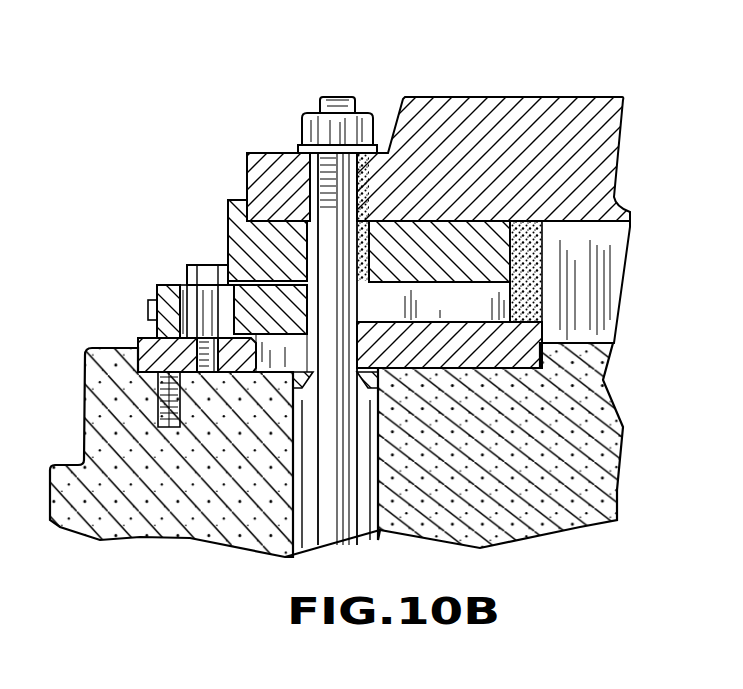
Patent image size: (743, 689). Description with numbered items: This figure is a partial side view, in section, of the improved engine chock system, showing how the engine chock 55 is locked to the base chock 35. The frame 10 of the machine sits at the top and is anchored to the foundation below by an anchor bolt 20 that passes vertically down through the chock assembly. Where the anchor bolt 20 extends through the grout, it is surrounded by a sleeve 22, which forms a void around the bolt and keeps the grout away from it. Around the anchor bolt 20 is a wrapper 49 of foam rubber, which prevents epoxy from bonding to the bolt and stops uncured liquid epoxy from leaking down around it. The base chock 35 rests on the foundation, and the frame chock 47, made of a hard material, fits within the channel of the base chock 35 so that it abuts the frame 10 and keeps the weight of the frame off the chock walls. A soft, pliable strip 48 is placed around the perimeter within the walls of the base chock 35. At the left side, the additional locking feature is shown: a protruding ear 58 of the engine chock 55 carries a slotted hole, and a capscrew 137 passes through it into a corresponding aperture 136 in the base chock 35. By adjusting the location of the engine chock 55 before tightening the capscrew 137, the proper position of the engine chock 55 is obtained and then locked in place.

The frame 10 is at (615, 150).
The anchor bolt 20 is at (356, 110).
The sleeve 22 is at (287, 480).
The base chock 35 is at (138, 340).
The frame chock 47 is at (234, 288).
The strip 48 is at (543, 290).
The wrapper 49 is at (312, 183).
The engine chock 55 is at (227, 252).
The protruding ears 58 is at (157, 288).
The apertures 136 is at (182, 285).
The capscrews 137 is at (187, 266).